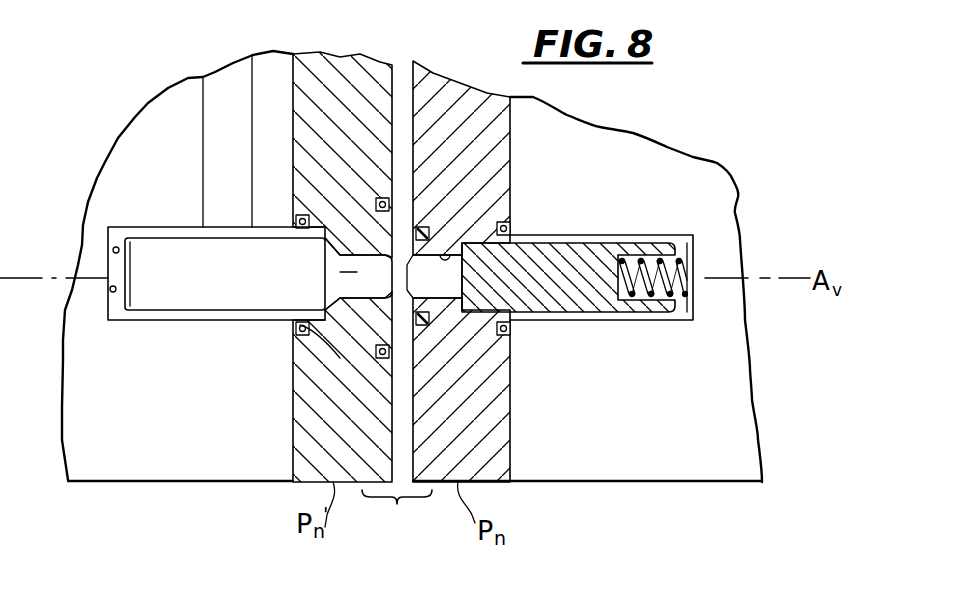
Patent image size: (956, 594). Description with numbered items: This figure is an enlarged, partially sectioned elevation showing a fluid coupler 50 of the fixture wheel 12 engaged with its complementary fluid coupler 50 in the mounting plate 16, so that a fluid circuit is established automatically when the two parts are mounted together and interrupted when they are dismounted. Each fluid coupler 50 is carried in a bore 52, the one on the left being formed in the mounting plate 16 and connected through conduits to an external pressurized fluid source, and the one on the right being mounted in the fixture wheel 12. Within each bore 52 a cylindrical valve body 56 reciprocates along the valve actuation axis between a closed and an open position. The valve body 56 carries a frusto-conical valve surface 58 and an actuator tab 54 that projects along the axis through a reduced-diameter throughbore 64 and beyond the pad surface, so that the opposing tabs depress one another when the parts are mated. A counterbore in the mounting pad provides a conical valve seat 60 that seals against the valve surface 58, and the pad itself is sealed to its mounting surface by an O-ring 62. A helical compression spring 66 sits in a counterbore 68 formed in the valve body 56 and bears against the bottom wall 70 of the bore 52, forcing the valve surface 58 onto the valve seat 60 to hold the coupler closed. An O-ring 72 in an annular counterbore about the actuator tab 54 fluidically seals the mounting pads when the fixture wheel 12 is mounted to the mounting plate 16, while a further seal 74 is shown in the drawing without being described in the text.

The fixture wheel 12 is at (615, 465).
The mounting plate 16 is at (158, 472).
The fluid coupler 50 is at (190, 334).
The bore 52 is at (145, 227).
The actuator tab 54 is at (327, 248).
The valve body 56 is at (223, 286).
The frusto-conical valve surface 58 is at (327, 304).
The valve seat 60 is at (318, 345).
The O-ring 62 is at (296, 328).
The reduced-diameter throughbore 64 is at (445, 250).
The helical compression spring 66 is at (111, 292).
The counterbore 68 is at (628, 256).
The bottom wall 70 is at (693, 308).
The O-ring 72 is at (430, 240).
The seal 74 is at (376, 205).